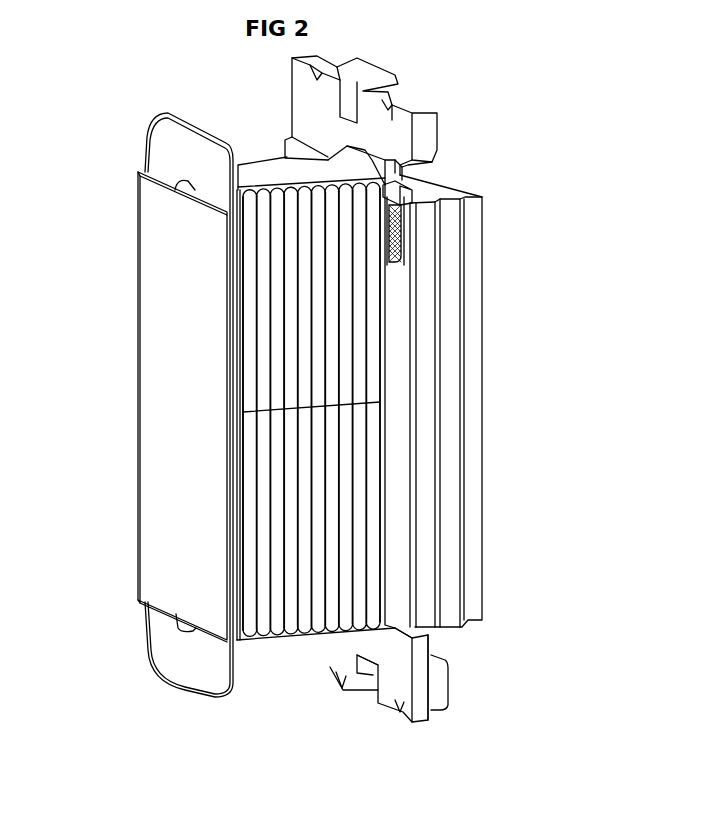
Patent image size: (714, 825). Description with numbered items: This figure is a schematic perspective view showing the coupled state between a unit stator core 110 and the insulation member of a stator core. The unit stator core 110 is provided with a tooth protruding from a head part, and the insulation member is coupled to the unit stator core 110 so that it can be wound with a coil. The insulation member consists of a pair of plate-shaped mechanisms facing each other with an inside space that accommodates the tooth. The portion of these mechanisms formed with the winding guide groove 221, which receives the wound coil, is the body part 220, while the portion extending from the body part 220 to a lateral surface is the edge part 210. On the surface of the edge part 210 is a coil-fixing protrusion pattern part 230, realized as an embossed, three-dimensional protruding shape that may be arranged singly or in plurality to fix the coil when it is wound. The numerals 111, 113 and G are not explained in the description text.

The unit stator core 110 is at (493, 401).
The lower frame portion 111 is at (452, 633).
The cover plate 113 is at (170, 487).
The edge part 210 is at (393, 190).
The body part 220 is at (224, 422).
The winding guide groove 221 is at (263, 198).
The coil-fixing protrusion pattern part 230 is at (406, 228).
The gap G is at (252, 638).